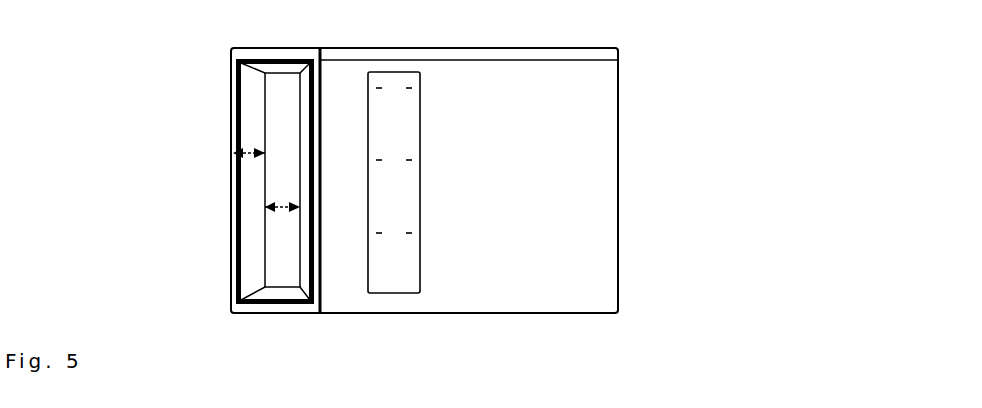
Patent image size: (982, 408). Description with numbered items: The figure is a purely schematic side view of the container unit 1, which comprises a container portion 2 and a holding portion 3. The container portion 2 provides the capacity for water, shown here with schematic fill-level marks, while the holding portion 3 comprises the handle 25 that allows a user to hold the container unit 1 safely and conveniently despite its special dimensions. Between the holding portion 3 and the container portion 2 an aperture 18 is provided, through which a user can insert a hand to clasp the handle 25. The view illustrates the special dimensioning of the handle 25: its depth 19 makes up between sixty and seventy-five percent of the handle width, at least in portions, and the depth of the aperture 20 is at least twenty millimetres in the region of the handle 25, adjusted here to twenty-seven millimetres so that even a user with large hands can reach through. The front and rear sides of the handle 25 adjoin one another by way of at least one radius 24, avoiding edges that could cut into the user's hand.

The container unit 1 is at (676, 48).
The container portion 2 is at (322, 325).
The holding portion 3 is at (316, 325).
The aperture 18 is at (281, 110).
The depth of the handle 19 is at (237, 150).
The depth of the aperture 20 is at (270, 208).
The radius 24 is at (234, 205).
The handle 25 is at (232, 226).